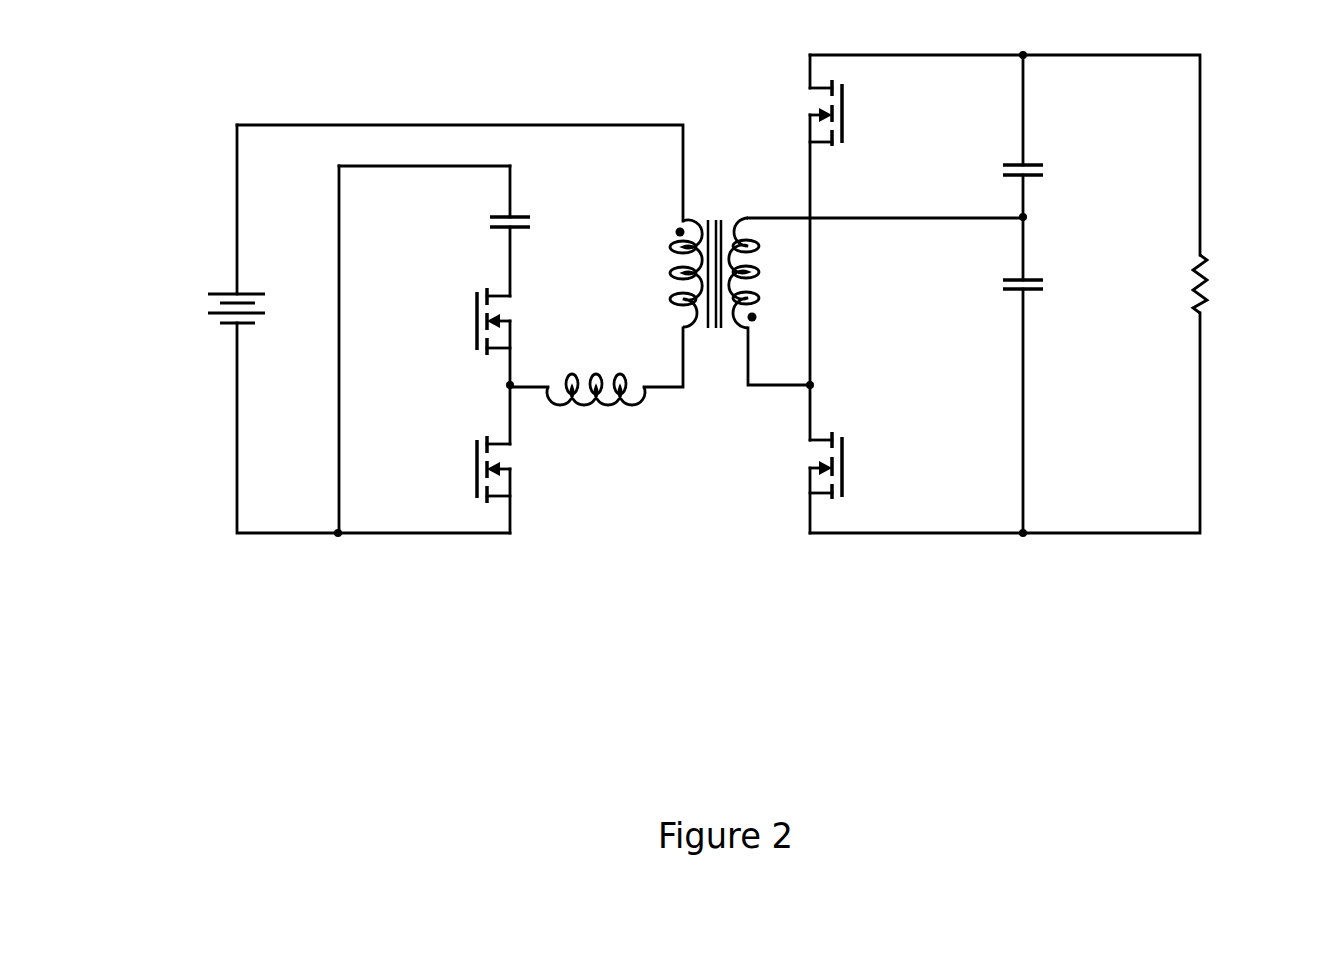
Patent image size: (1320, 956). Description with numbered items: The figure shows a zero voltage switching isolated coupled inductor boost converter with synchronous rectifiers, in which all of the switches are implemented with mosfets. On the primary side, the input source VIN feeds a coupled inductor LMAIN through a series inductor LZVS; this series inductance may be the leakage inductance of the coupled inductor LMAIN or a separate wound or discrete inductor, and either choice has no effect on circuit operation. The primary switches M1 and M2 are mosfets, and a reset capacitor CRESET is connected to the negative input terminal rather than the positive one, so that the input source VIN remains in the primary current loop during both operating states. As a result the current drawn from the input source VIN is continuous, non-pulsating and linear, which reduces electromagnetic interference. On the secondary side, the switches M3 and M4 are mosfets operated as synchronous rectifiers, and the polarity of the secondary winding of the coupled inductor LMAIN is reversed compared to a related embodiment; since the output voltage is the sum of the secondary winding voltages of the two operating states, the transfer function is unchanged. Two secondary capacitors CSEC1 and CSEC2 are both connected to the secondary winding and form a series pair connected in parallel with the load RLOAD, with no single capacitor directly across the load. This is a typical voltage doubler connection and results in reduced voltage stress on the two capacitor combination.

The input source VIN is at (206, 311).
The reset capacitor CRESET is at (544, 196).
The M1 switch M1 is at (477, 469).
The M2 switch M2 is at (477, 321).
The series inductor LZVS is at (596, 412).
The coupled inductor LMAIN is at (717, 254).
The M3 switch M3 is at (842, 468).
The M4 switch M4 is at (842, 115).
The secondary capacitor CSEC1 is at (991, 262).
The secondary capacitor CSEC2 is at (991, 147).
The load RLOAD is at (1245, 284).